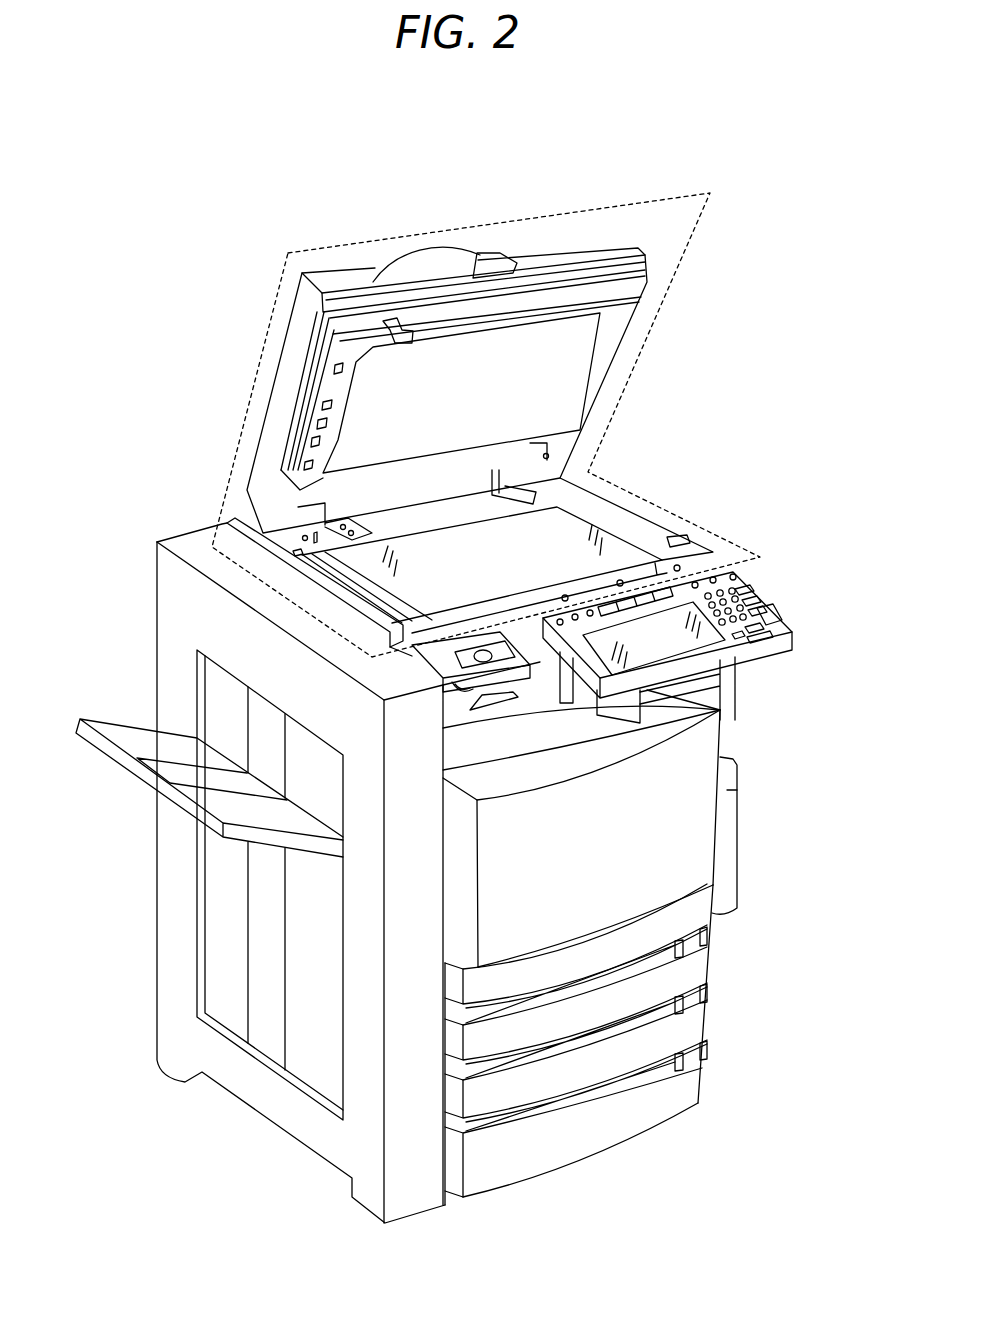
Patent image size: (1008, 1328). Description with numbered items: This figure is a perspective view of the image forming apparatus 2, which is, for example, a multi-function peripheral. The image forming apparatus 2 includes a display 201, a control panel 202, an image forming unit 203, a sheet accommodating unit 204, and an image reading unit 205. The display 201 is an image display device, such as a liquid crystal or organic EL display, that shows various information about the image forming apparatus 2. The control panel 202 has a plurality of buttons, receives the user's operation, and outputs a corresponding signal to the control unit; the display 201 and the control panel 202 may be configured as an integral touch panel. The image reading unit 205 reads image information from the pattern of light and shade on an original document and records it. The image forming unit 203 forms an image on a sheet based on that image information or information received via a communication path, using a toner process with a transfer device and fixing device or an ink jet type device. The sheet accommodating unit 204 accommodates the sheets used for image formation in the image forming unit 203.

The image forming apparatus 2 is at (496, 160).
The display 201 is at (682, 618).
The control panel 202 is at (770, 612).
The image forming unit 203 is at (690, 866).
The sheet accommodating unit 204 is at (722, 920).
The image reading unit 205 is at (648, 200).